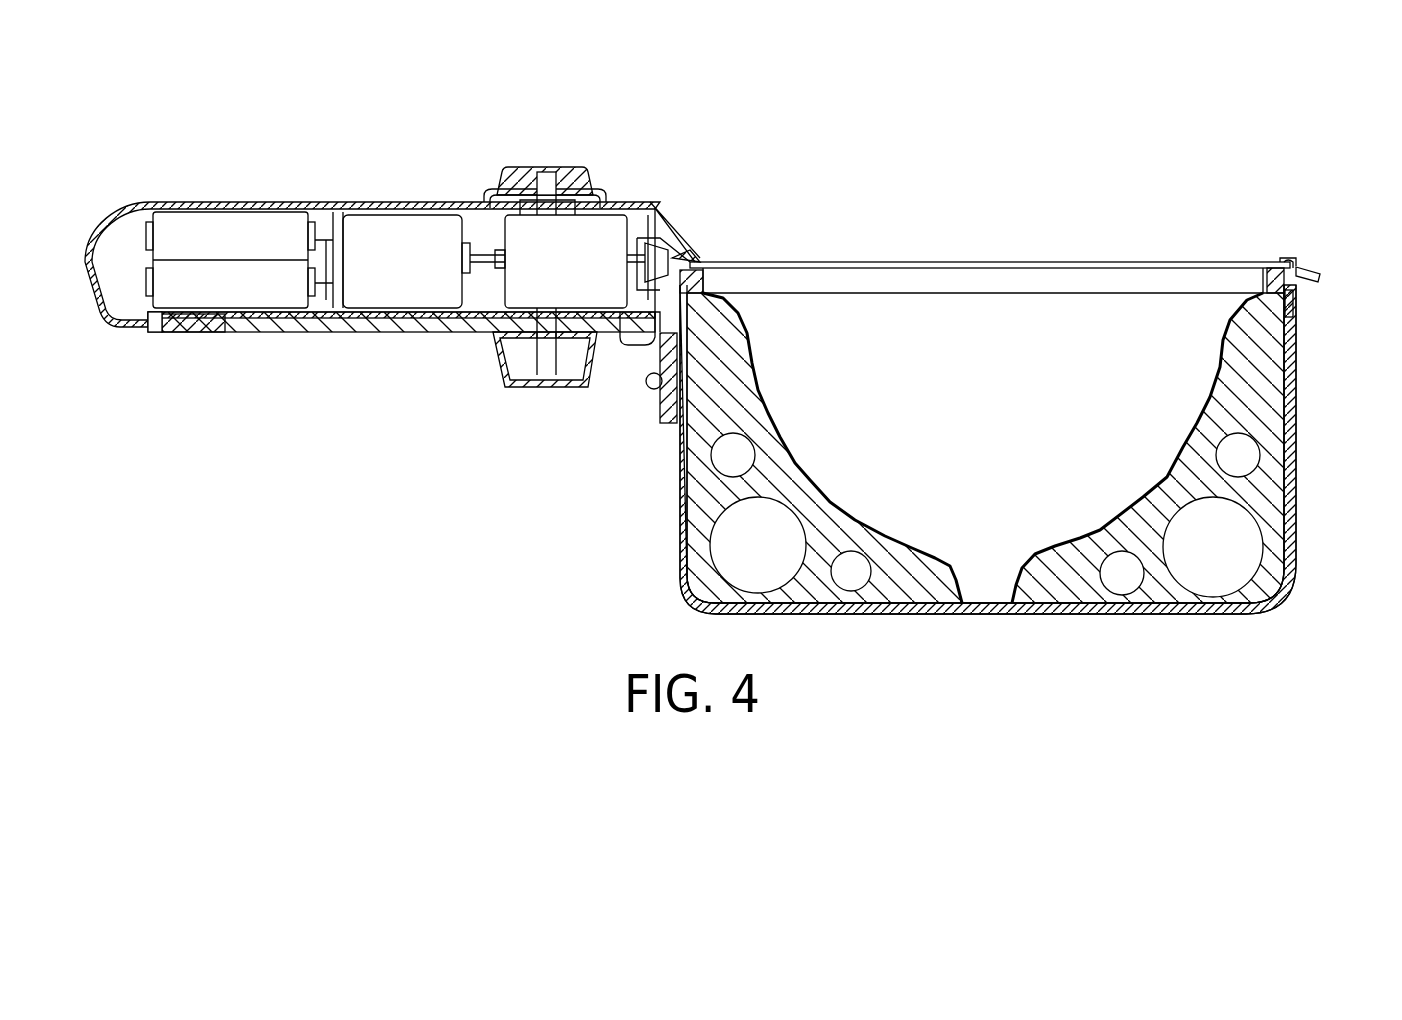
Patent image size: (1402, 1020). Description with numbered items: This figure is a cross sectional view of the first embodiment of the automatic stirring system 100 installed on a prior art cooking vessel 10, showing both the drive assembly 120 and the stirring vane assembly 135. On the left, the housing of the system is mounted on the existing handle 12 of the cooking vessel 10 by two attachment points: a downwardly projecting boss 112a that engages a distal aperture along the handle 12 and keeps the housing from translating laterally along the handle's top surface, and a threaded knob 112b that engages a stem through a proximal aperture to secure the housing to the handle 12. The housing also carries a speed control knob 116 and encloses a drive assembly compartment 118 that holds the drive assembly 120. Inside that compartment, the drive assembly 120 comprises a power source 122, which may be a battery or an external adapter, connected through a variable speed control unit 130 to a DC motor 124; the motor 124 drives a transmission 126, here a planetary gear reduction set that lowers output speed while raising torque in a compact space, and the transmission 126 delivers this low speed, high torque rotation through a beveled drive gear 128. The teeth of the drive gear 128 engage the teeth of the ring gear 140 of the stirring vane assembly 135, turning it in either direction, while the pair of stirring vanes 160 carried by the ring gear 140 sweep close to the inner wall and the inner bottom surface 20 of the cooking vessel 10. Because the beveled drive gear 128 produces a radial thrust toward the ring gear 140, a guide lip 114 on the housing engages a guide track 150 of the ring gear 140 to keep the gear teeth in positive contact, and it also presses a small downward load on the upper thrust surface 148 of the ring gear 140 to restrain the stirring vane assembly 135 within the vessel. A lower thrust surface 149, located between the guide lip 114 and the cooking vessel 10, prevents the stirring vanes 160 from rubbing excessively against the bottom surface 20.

The cooking vessel 10 is at (997, 376).
The handle 12 is at (415, 320).
The inner bottom surface 20 is at (975, 594).
The automatic stirring system 100 is at (406, 238).
The downwardly projecting boss 112a is at (190, 325).
The threaded knob 112b is at (525, 385).
The guide lip 114 is at (688, 245).
The speed control knob 116 is at (545, 175).
The drive assembly compartment 118 is at (125, 245).
The drive assembly 120 is at (406, 238).
The power source 122 is at (244, 260).
The motor 124 is at (424, 261).
The transmission 126 is at (575, 261).
The drive gear 128 is at (658, 222).
The variable speed control unit 130 is at (520, 205).
The stirring vane assembly 135 is at (950, 250).
The ring gear 140 is at (1302, 270).
The upper thrust surface 148 is at (700, 265).
The lower thrust surface 149 is at (668, 340).
The guide track 150 is at (690, 262).
The stirring vanes 160 is at (715, 495).